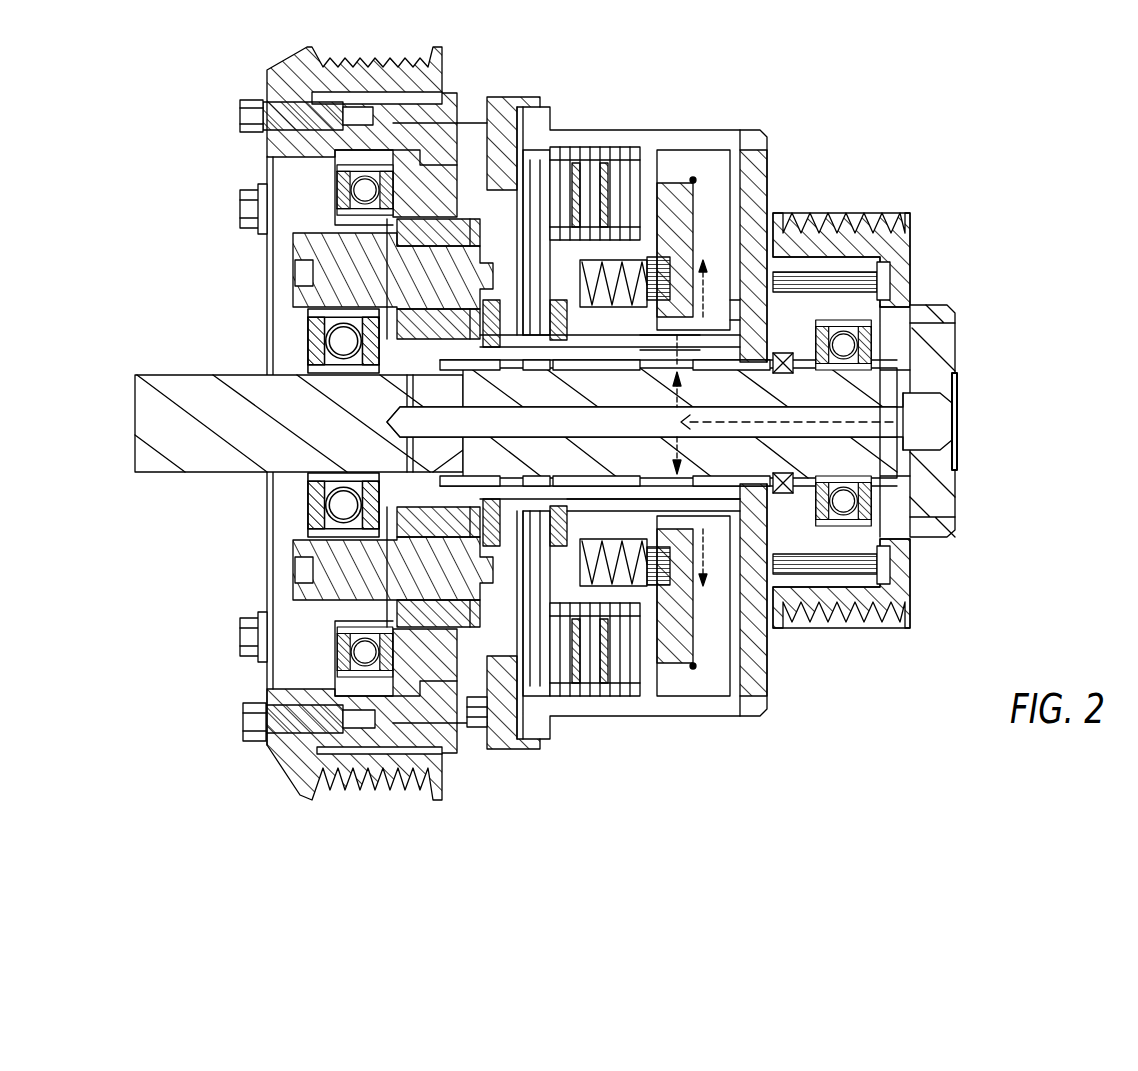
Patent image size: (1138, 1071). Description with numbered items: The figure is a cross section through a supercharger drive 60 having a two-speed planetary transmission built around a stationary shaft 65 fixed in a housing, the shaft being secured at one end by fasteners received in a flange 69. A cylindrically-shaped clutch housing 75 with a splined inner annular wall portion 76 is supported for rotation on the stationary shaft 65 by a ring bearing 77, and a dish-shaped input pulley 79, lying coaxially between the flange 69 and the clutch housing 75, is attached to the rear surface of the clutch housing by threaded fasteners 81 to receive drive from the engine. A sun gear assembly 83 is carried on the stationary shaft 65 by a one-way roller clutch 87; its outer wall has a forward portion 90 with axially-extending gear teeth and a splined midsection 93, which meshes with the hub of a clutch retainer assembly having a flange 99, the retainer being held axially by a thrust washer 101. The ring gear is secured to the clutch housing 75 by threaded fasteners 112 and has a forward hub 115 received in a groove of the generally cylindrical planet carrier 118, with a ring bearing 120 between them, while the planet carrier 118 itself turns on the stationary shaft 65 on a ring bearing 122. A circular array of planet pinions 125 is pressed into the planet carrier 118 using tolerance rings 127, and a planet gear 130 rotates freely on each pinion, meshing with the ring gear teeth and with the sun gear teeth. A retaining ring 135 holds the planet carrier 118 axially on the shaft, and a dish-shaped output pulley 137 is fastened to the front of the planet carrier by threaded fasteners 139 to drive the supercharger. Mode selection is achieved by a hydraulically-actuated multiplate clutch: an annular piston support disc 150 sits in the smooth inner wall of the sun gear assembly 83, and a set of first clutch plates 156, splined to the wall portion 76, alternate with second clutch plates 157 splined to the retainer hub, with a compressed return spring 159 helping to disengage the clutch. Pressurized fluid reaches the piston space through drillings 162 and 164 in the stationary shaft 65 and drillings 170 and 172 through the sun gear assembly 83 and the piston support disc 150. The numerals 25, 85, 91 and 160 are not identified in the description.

The clutch hub 25 is at (530, 217).
The supercharger drive 60 is at (945, 130).
The stationary shaft 65 is at (197, 387).
The flange 69 is at (940, 357).
The clutch housing 75 is at (748, 133).
The splined inner annular wall portion 76 is at (530, 142).
The ring bearing 77 is at (860, 330).
The input pulley 79 is at (883, 233).
The threaded fasteners 81 is at (887, 267).
The sun gear assembly 83 is at (604, 401).
The seal 85 is at (783, 367).
The one-way roller clutch 87 is at (473, 367).
The forward portion 90 is at (457, 500).
The piston 91 is at (625, 605).
The splined midsection 93 is at (603, 505).
The flange 99 is at (538, 655).
The thrust washer 101 is at (562, 503).
The threaded fasteners 112 is at (470, 727).
The forward hub 115 is at (397, 165).
The planet carrier 118 is at (350, 102).
The ring bearing 120 is at (343, 173).
The ring bearing 122 is at (315, 327).
The planet pinions 125 is at (295, 252).
The tolerance rings 127 is at (335, 602).
The planet gear 130 is at (414, 276).
The retaining ring 135 is at (300, 477).
The output pulley 137 is at (285, 767).
The threaded fasteners 139 is at (247, 117).
The piston support disc 150 is at (727, 180).
The first clutch plates 156 is at (624, 148).
The second clutch plates 157 is at (624, 698).
The return spring 159 is at (673, 570).
The spring 160 is at (620, 563).
The drilling 162 is at (882, 418).
The drilling 164 is at (688, 392).
The drilling 170 is at (668, 352).
The drilling 172 is at (742, 320).